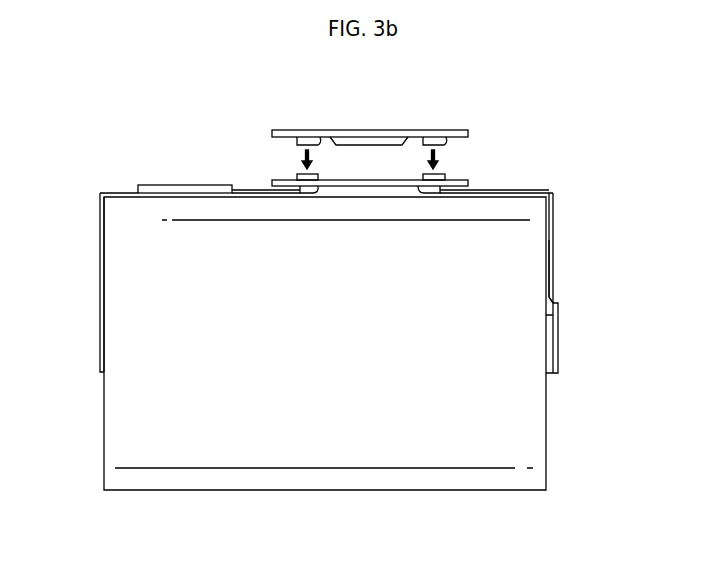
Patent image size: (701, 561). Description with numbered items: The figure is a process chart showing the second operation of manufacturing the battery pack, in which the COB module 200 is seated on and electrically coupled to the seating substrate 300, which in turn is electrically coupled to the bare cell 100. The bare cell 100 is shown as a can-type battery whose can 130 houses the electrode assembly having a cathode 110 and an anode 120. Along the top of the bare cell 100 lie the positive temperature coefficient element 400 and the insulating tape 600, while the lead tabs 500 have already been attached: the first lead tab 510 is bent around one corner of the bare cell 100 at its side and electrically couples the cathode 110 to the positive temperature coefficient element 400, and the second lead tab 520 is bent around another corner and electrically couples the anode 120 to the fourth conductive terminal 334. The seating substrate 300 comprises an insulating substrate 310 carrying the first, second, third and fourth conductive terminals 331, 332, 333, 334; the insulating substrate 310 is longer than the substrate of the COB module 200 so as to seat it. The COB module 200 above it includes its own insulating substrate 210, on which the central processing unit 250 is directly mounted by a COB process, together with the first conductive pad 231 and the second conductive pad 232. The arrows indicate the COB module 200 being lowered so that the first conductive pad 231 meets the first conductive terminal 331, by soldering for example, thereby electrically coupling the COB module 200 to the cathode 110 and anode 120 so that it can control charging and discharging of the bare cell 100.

The bare cell 100 is at (328, 366).
The cathode 110 is at (104, 394).
The anode 120 is at (547, 374).
The can 130 is at (365, 477).
The COB module 200 is at (392, 112).
The insulating substrate 210 is at (283, 130).
The first conductive pad 231 is at (325, 145).
The second conductive pad 232 is at (452, 145).
The central processing unit 250 is at (363, 142).
The seating substrate 300 is at (370, 199).
The insulating substrate 310 is at (370, 186).
The first conductive terminal 331 is at (300, 175).
The second conductive terminal 332 is at (426, 176).
The third conductive terminal 333 is at (322, 194).
The fourth conductive terminal 334 is at (417, 194).
The positive temperature coefficient element 400 is at (180, 184).
The lead tabs 500 is at (584, 248).
The first lead tab 510 is at (100, 283).
The second lead tab 520 is at (552, 277).
The insulating tape 600 is at (548, 212).